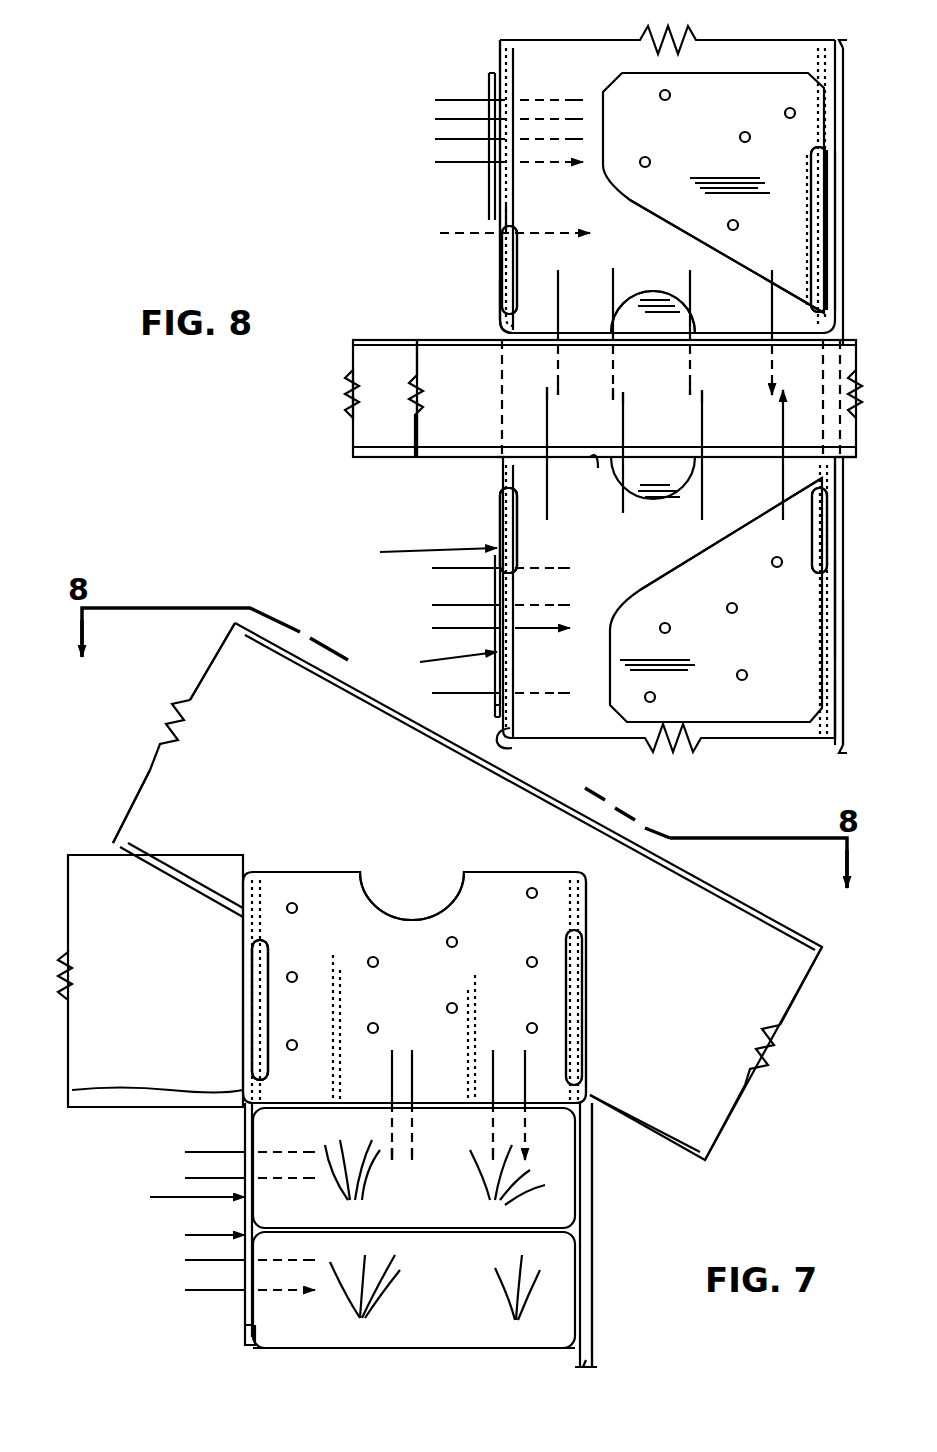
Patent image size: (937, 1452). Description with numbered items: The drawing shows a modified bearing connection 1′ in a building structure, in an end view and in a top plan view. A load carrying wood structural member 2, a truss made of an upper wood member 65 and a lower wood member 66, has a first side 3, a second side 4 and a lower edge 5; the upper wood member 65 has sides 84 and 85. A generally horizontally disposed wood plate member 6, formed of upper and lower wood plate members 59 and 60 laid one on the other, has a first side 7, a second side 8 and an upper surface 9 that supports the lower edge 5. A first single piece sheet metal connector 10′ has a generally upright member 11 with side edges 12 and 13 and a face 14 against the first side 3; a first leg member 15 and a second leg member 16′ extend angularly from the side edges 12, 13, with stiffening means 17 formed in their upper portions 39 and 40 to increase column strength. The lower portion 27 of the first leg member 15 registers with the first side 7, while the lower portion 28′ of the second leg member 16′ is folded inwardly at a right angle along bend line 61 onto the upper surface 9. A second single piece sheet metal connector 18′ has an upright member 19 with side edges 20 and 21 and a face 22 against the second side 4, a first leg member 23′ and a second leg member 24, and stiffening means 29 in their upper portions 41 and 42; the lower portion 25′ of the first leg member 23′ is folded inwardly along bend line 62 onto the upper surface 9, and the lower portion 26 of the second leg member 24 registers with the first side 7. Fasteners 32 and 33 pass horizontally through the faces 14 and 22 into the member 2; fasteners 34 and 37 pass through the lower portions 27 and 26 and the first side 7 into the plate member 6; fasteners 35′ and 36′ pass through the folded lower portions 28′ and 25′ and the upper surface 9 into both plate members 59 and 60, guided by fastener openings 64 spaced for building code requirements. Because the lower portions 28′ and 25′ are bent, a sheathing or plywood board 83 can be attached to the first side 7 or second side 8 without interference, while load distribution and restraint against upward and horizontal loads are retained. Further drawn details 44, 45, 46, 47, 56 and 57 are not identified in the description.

In FIG. 8, the modified bearing connection 1′ is at (378, 270).
In FIG. 7, the modified bearing connection 1′ is at (140, 760).
In FIG. 8, the load carrying wood structural member 2 is at (352, 435).
In FIG. 7, the load carrying wood structural member 2 is at (78, 848).
In FIG. 8, the first side 3 is at (378, 470).
In FIG. 7, the first side 3 is at (136, 1016).
In FIG. 8, the second side 4 is at (365, 340).
In FIG. 7, the lower edge 5 is at (120, 1112).
In FIG. 8, the wood plate member 6 is at (772, 745).
In FIG. 7, the wood plate member 6 is at (285, 1352).
In FIG. 8, the first side 7 is at (512, 748).
In FIG. 7, the first side 7 is at (247, 1345).
In FIG. 8, the second side 8 is at (843, 690).
In FIG. 7, the second side 8 is at (595, 1295).
In FIG. 8, the upper surface 9 is at (570, 724).
In FIG. 8, the first single piece sheet metal connector 10′ is at (423, 550).
In FIG. 7, the first single piece sheet metal connector 10′ is at (181, 1197).
In FIG. 8, the generally upright member 11 is at (665, 462).
In FIG. 7, the generally upright member 11 is at (316, 868).
In FIG. 8, the side edge 12 is at (497, 470).
In FIG. 8, the side edge 13 is at (840, 465).
In FIG. 8, the face 14 is at (597, 473).
In FIG. 8, the first leg member 15 is at (444, 660).
In FIG. 7, the first leg member 15 is at (200, 1232).
In FIG. 8, the second leg member 16′ is at (712, 535).
In FIG. 7, the second leg member 16′ is at (590, 1010).
In FIG. 8, the stiffening means 17 is at (514, 510).
In FIG. 7, the stiffening means 17 is at (268, 962).
In FIG. 8, the second single piece sheet metal connector 18′ is at (500, 216).
In FIG. 8, the generally upright member 19 is at (573, 325).
In FIG. 8, the side edge 20 is at (843, 325).
In FIG. 8, the side edge 21 is at (500, 325).
In FIG. 8, the face 22 is at (740, 335).
In FIG. 8, the first leg member 23′ is at (618, 215).
In FIG. 8, the second leg member 24 is at (497, 182).
In FIG. 8, the lower portion 25′ is at (728, 127).
In FIG. 8, the lower portion 26 is at (490, 80).
In FIG. 8, the lower portion 27 is at (497, 700).
In FIG. 7, the lower portion 27 is at (245, 1318).
In FIG. 8, the lower portion 28′ is at (723, 597).
In FIG. 7, the lower portion 28′ is at (428, 1095).
In FIG. 8, the stiffening means 29 is at (519, 242).
In FIG. 8, the first plurality of fasteners 32 is at (786, 472).
In FIG. 8, the second plurality of fasteners 33 is at (695, 283).
In FIG. 8, the third plurality of fasteners 34 is at (480, 608).
In FIG. 7, the third plurality of fasteners 34 is at (195, 1175).
In FIG. 8, the fourth plurality of fasteners 35′ is at (655, 695).
In FIG. 7, the fourth plurality of fasteners 35′ is at (412, 1130).
In FIG. 8, the fifth plurality of fasteners 36′ is at (738, 222).
In FIG. 8, the sixth plurality of fasteners 37 is at (440, 160).
In FIG. 8, the upper portion 39 is at (500, 505).
In FIG. 7, the upper portion 39 is at (240, 935).
In FIG. 8, the upper portion 40 is at (840, 560).
In FIG. 7, the upper portion 40 is at (588, 923).
In FIG. 8, the upper portion 41 is at (836, 275).
In FIG. 8, the upper portion 42 is at (500, 295).
In FIG. 8, the channel slot 44 is at (512, 565).
In FIG. 7, the channel slot 44 is at (262, 1015).
In FIG. 8, the channel slot 45 is at (815, 580).
In FIG. 7, the channel slot 45 is at (566, 1000).
In FIG. 8, the channel slot 46 is at (813, 272).
In FIG. 8, the channel slot 47 is at (512, 275).
In FIG. 8, the lower air passage 56 is at (650, 505).
In FIG. 8, the upper air passage 57 is at (700, 315).
In FIG. 7, the upper wood plate member 59 is at (452, 1202).
In FIG. 7, the lower wood plate member 60 is at (454, 1300).
In FIG. 8, the bend line 61 is at (835, 625).
In FIG. 8, the bend line 62 is at (827, 250).
In FIG. 7, the fastener openings 64 is at (377, 1024).
In FIG. 8, the upper wood member 65 is at (430, 465).
In FIG. 7, the upper wood member 65 is at (215, 660).
In FIG. 8, the lower wood member 66 is at (352, 385).
In FIG. 7, the lower wood member 66 is at (103, 872).
In FIG. 8, the sheathing board 83 is at (838, 665).
In FIG. 7, the sheathing board 83 is at (595, 1215).
In FIG. 8, the side 84 is at (440, 457).
In FIG. 7, the side 84 is at (770, 972).
In FIG. 8, the side 85 is at (418, 340).